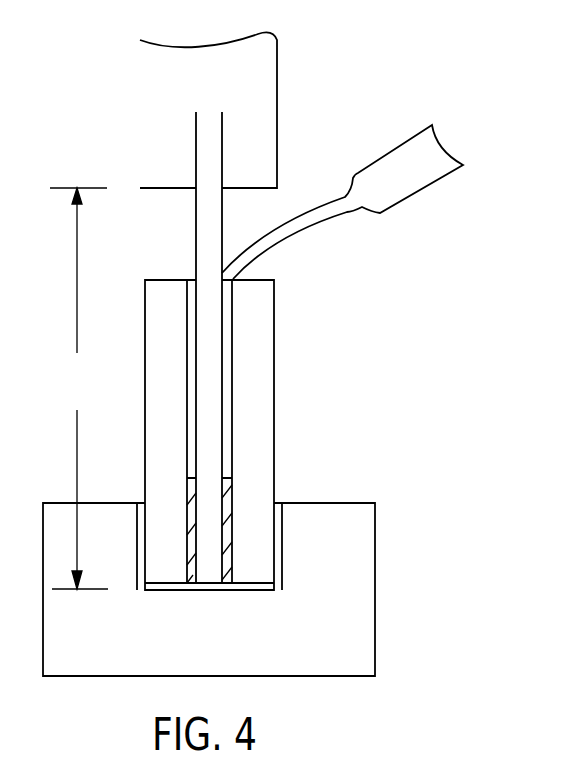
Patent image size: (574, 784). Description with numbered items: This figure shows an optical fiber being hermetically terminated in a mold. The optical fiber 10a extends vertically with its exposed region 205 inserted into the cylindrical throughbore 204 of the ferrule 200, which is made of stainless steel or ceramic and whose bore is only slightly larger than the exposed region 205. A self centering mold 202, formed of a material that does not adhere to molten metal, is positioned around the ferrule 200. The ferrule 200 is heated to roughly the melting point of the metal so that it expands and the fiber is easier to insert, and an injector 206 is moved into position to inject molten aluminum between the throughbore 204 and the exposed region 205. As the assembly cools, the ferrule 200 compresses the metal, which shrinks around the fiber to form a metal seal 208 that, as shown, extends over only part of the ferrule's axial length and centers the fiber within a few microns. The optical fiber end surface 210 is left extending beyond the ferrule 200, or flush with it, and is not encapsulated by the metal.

The optical fiber 10a is at (245, 176).
The ferrule 200 is at (257, 461).
The self centering mold 202 is at (357, 629).
The throughbore 204 is at (232, 385).
The exposed region 205 is at (79, 388).
The injector 206 is at (408, 183).
The metal seal 208 is at (227, 511).
The optical fiber end surface 210 is at (209, 584).